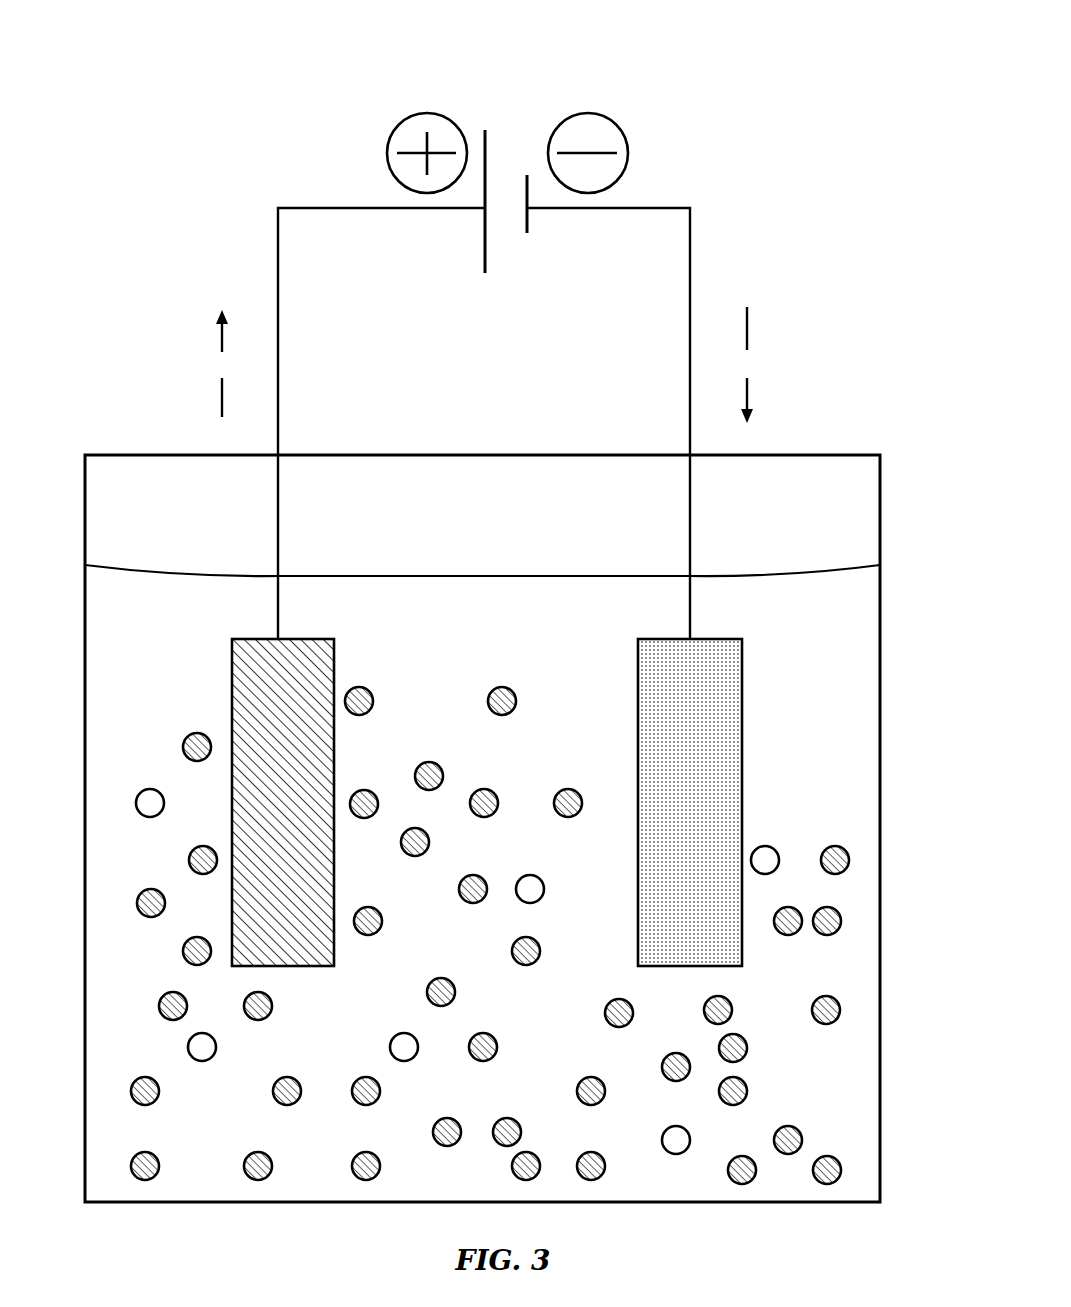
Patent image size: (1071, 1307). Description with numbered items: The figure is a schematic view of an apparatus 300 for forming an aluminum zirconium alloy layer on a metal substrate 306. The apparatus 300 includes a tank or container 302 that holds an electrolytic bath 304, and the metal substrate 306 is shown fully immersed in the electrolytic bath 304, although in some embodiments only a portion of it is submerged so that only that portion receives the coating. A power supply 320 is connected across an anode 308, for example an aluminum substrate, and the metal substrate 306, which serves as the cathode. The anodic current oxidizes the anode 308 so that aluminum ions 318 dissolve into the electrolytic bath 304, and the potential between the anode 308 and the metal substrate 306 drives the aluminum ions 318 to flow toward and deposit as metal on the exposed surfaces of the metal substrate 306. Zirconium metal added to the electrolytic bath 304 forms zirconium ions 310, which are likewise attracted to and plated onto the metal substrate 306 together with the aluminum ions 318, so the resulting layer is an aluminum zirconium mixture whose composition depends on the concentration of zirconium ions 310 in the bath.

The apparatus 300 is at (352, 86).
The tank or container 302 is at (880, 688).
The electrolytic bath 304 is at (482, 661).
The metal substrate 306 is at (690, 802).
The anode 308 is at (283, 802).
The zirconium ions 310 is at (188, 1047).
The aluminum ions 318 is at (835, 999).
The power supply 320 is at (507, 135).